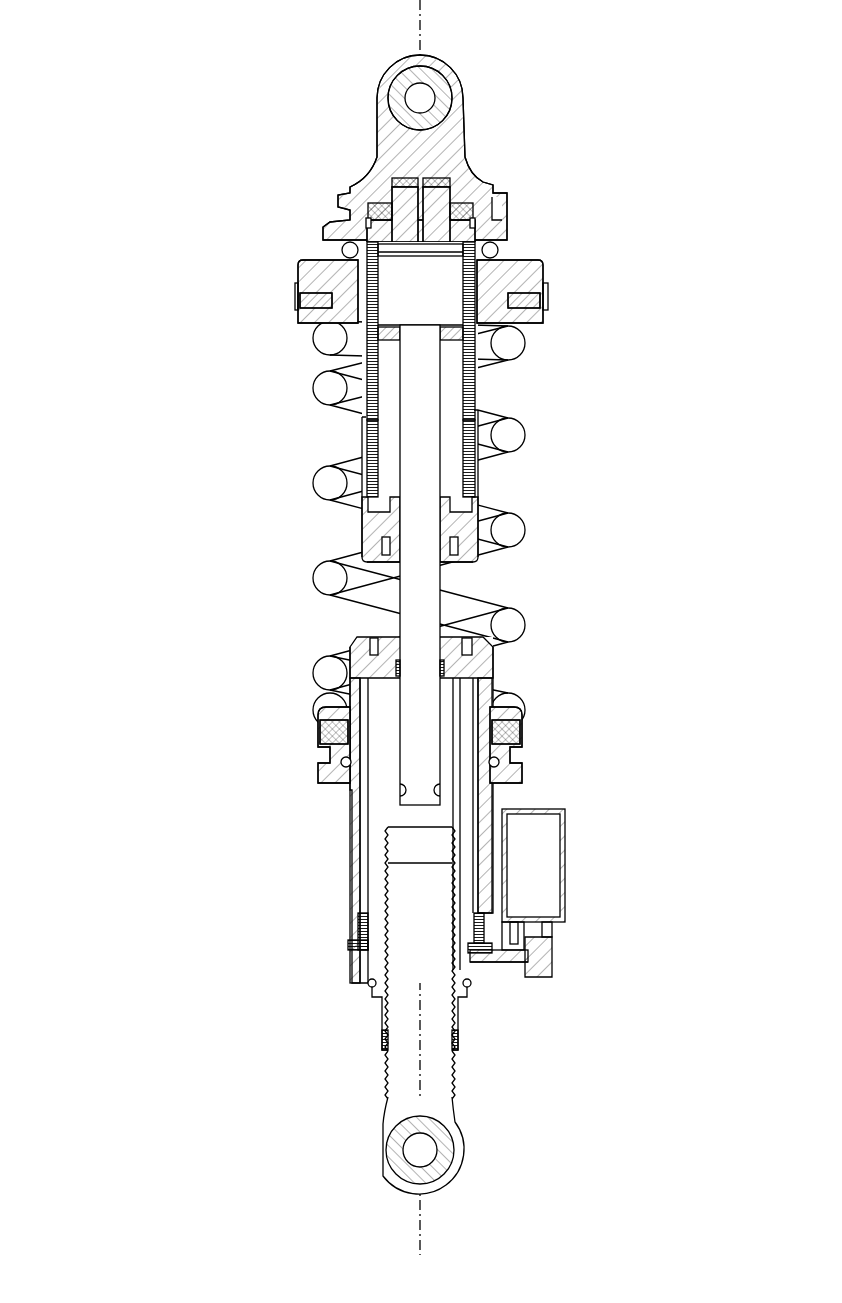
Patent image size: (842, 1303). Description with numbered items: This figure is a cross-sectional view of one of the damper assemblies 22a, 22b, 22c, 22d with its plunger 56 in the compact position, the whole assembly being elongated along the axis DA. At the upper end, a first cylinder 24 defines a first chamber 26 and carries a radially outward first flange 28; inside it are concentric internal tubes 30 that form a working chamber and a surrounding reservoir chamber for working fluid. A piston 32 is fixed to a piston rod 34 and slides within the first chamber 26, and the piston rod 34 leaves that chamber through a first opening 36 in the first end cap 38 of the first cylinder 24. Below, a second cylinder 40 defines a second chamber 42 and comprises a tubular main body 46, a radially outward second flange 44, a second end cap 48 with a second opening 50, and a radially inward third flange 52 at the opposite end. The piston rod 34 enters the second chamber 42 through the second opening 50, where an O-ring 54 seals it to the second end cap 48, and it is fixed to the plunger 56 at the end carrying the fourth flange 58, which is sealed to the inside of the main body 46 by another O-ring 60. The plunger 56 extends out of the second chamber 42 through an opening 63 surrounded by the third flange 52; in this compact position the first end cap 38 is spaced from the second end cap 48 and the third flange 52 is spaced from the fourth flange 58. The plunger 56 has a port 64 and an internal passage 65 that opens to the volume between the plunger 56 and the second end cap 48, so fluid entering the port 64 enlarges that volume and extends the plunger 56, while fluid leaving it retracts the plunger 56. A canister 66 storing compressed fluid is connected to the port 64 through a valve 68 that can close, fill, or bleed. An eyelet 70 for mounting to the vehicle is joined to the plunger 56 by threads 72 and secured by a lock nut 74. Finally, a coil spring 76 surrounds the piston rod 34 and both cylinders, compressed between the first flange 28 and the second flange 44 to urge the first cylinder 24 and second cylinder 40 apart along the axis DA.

The damper assembly 22a is at (345, 627).
The damper assembly 22b is at (345, 627).
The damper assembly 22c is at (345, 627).
The damper assembly 22d is at (176, 152).
The axis DA is at (422, 36).
The first cylinder 24 is at (482, 490).
The first chamber 26 is at (455, 400).
The first flange 28 is at (545, 312).
The internal tubes 30 is at (473, 482).
The piston 32 is at (400, 340).
The piston rod 34 is at (415, 447).
The first opening 36 is at (440, 560).
The first end cap 38 is at (380, 522).
The second cylinder 40 is at (350, 847).
The second chamber 42 is at (477, 805).
The second flange 44 is at (318, 747).
The main body 46 is at (492, 900).
The second end cap 48 is at (470, 662).
The second opening 50 is at (405, 640).
The third flange 52 is at (477, 925).
The O-ring 54 is at (400, 668).
The plunger 56 is at (378, 887).
The fourth flange 58 is at (487, 697).
The O-ring 60 is at (362, 683).
The opening 63 is at (367, 930).
The port 64 is at (530, 977).
The internal passage 65 is at (470, 880).
The canister 66 is at (567, 823).
The valve 68 is at (552, 947).
The eyelet 70 is at (473, 1148).
The threads 72 is at (402, 975).
The lock nut 74 is at (457, 1055).
The coil spring 76 is at (518, 530).